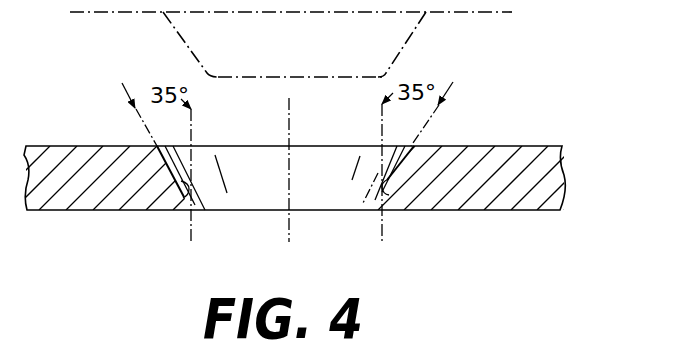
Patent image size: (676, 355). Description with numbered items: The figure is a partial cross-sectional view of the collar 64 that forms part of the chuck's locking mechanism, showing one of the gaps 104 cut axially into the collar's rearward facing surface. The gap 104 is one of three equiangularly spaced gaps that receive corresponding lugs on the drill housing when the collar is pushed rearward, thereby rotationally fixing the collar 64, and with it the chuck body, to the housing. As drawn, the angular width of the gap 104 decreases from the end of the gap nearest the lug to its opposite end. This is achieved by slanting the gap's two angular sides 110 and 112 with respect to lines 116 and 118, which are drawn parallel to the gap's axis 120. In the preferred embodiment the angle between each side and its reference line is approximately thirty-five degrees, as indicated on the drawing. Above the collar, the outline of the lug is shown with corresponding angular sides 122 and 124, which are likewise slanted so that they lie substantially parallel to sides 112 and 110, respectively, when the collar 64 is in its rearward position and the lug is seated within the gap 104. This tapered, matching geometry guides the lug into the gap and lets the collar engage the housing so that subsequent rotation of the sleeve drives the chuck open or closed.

The collar 64 is at (546, 146).
The gap 104 is at (328, 198).
The angular side 110 is at (384, 176).
The angular side 112 is at (182, 202).
The line 116 is at (191, 121).
The line 118 is at (381, 134).
The axis 120 is at (290, 101).
The angular side 122 is at (185, 47).
The angular side 124 is at (405, 45).